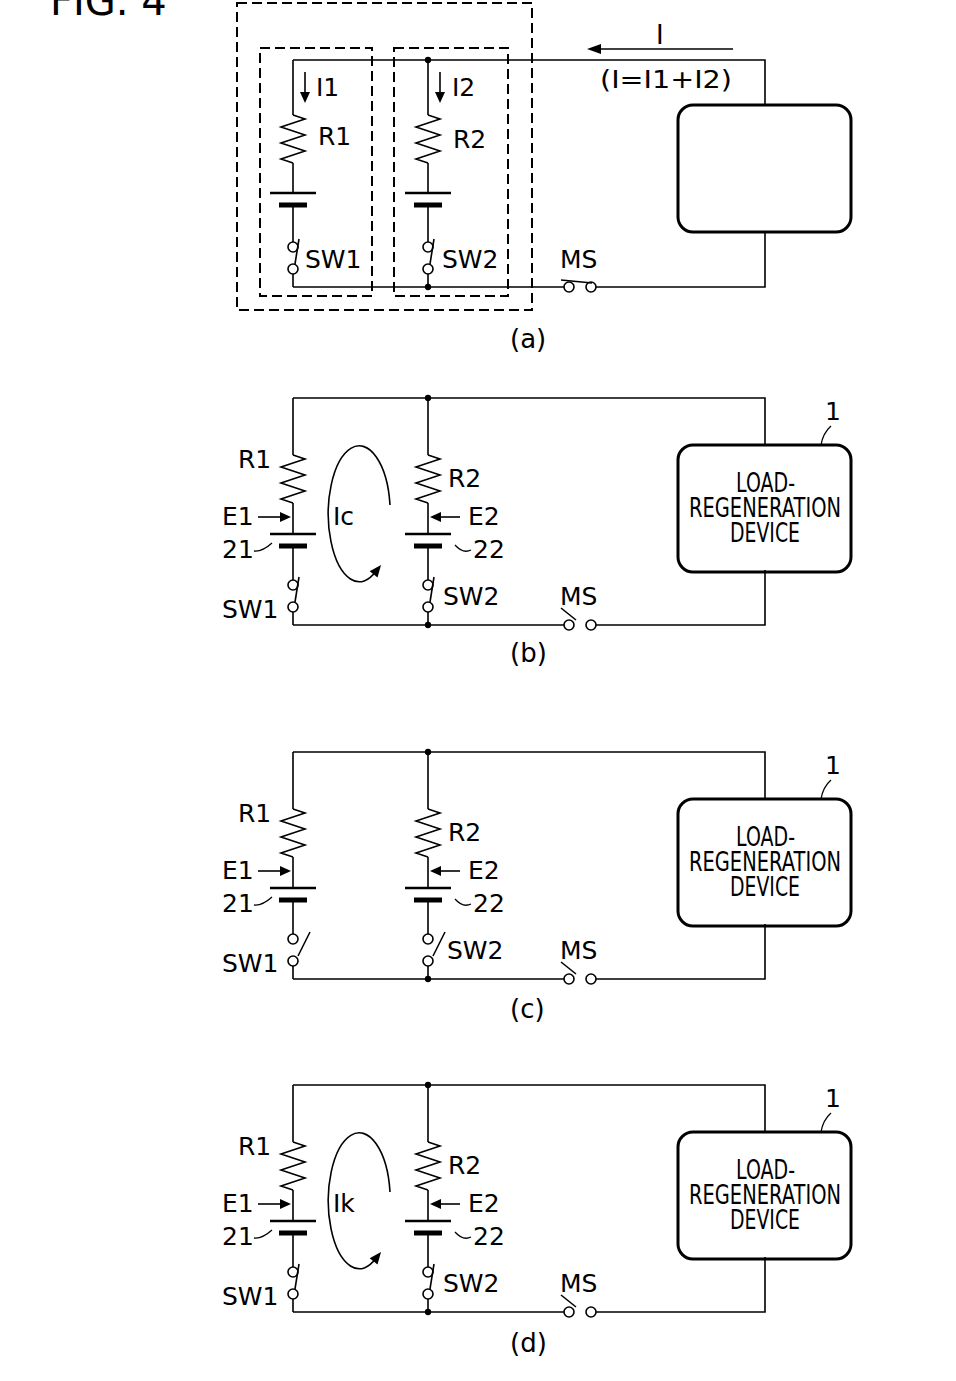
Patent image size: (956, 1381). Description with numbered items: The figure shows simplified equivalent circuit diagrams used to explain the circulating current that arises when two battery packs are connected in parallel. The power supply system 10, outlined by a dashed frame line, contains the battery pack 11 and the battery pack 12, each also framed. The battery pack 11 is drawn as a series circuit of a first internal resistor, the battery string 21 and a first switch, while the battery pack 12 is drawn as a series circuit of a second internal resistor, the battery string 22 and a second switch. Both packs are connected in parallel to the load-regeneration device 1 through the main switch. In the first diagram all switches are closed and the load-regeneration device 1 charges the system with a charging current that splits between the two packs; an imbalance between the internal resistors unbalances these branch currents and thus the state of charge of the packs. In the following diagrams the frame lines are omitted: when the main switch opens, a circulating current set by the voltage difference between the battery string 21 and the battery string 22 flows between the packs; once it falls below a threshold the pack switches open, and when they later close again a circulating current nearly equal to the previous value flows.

The load-regeneration device 1 is at (821, 105).
The power supply system 10 is at (533, 15).
The battery pack 11 is at (352, 48).
The battery pack 12 is at (458, 48).
The battery string 21 is at (310, 203).
The battery string 22 is at (446, 201).